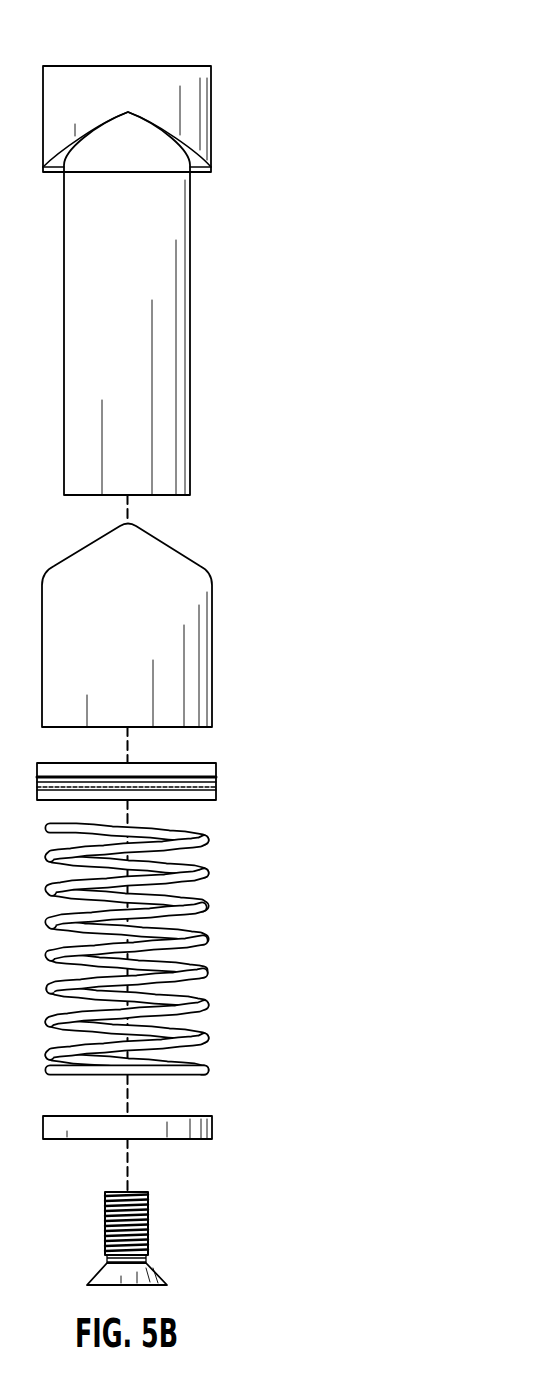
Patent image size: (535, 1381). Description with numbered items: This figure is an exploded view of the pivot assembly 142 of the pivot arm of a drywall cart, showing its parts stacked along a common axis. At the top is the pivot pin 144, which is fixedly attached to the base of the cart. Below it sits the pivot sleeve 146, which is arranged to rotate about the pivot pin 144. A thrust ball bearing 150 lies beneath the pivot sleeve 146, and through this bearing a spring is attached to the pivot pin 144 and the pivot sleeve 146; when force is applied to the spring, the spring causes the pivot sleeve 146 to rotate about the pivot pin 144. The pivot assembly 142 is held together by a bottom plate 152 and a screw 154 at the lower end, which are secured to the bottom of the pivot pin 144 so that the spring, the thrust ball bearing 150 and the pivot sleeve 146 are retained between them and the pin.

The pivot assembly 142 is at (295, 44).
The pivot pin 144 is at (168, 335).
The pivot sleeve 146 is at (203, 662).
The thrust ball bearing 150 is at (216, 770).
The bottom plate 152 is at (212, 1125).
The screw 154 is at (148, 1250).